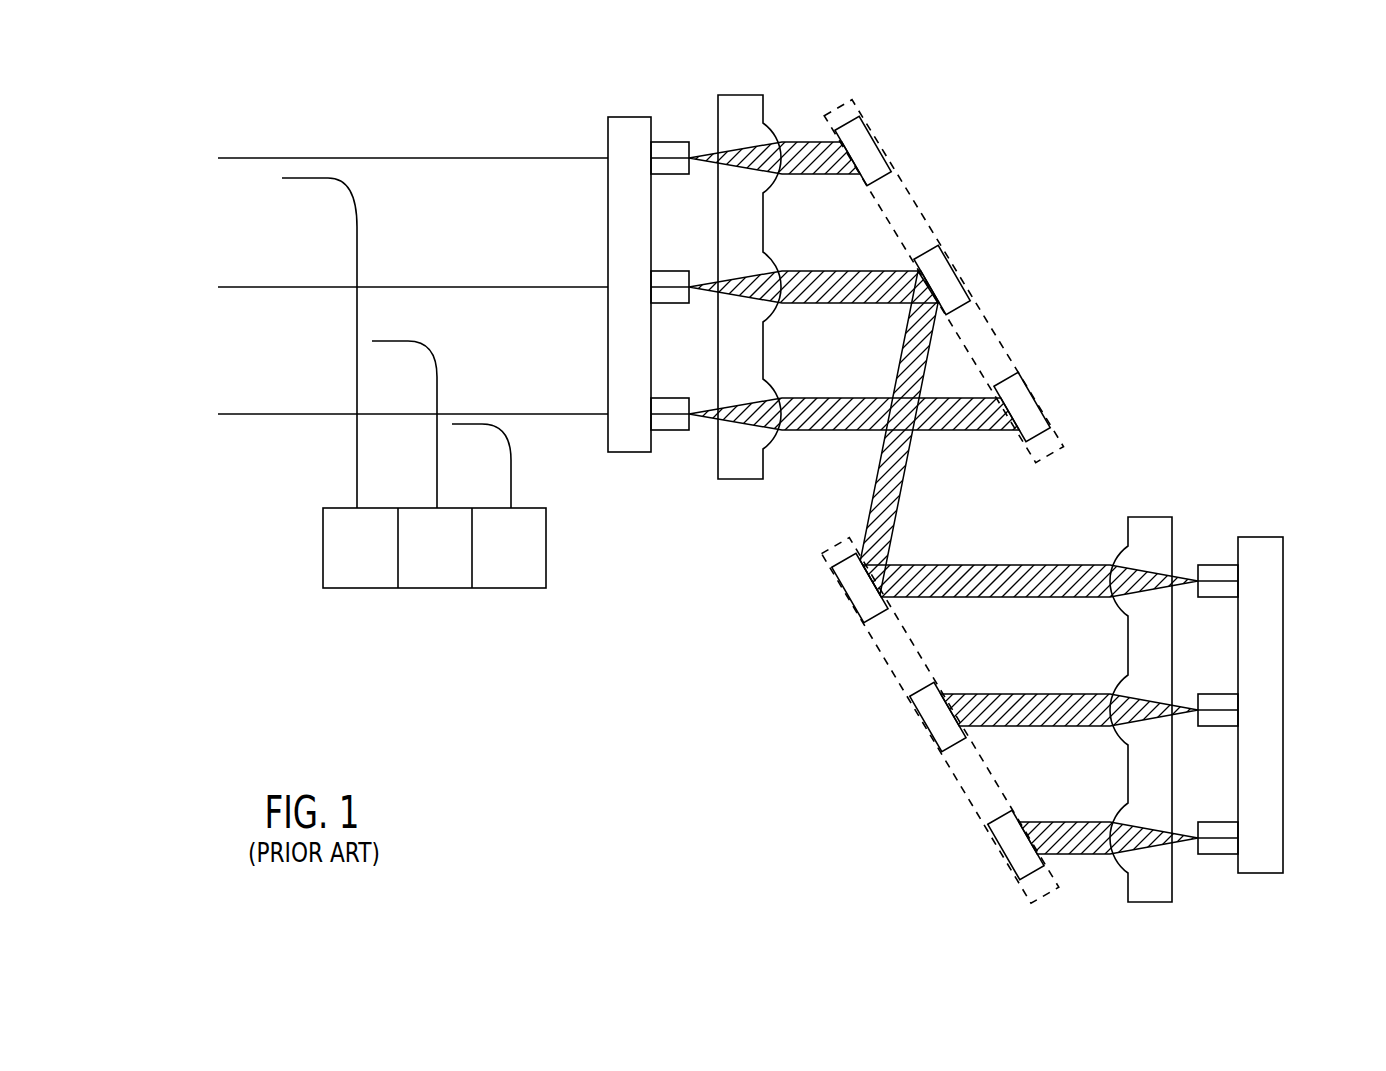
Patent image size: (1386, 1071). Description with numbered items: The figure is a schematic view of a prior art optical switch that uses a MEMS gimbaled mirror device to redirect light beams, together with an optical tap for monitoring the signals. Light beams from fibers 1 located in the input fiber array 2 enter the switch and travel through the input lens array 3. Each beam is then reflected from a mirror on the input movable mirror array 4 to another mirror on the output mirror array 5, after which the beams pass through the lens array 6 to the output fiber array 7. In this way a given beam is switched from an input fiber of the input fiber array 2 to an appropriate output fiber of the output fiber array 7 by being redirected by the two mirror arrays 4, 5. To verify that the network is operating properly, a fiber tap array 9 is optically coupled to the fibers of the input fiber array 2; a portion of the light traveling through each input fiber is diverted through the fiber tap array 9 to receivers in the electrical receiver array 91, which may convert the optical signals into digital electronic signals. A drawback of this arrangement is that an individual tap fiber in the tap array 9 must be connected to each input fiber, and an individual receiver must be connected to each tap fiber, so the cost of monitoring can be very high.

The fiber 1 is at (453, 274).
The input fiber array 2 is at (615, 258).
The input lens array 3 is at (760, 259).
The input movable mirror array 4 is at (943, 281).
The output mirror array 5 is at (930, 721).
The lens array 6 is at (1152, 682).
The output fiber array 7 is at (1267, 737).
The fiber tap array 9 is at (367, 307).
The electrical receiver array 91 is at (434, 576).